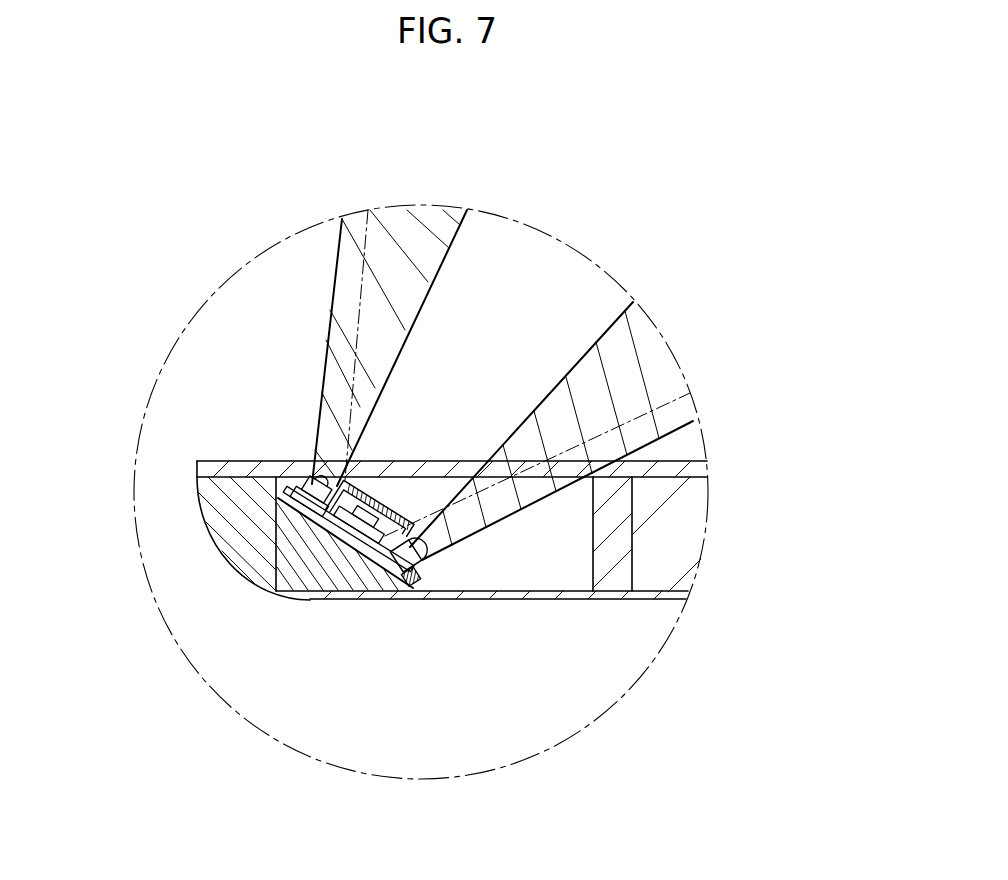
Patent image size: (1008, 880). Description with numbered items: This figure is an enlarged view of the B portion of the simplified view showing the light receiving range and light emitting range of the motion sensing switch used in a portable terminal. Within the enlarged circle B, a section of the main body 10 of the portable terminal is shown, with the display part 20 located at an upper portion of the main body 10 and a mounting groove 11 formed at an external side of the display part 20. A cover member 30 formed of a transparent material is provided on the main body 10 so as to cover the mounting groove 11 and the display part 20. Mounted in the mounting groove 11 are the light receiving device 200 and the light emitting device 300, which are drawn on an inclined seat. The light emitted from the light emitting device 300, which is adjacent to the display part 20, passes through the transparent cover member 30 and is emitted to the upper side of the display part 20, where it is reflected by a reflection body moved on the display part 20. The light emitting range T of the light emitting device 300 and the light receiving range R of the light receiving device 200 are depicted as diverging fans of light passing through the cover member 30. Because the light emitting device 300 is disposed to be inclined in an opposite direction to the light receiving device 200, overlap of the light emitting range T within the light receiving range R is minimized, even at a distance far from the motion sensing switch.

The main body 10 is at (238, 531).
The mounting groove 11 is at (565, 540).
The display part 20 is at (673, 543).
The cover member 30 is at (662, 474).
The light receiving device 200 is at (358, 533).
The light emitting device 300 is at (428, 558).
The light receiving range R is at (362, 282).
The light emitting range T is at (332, 310).
The B portion B is at (424, 110).